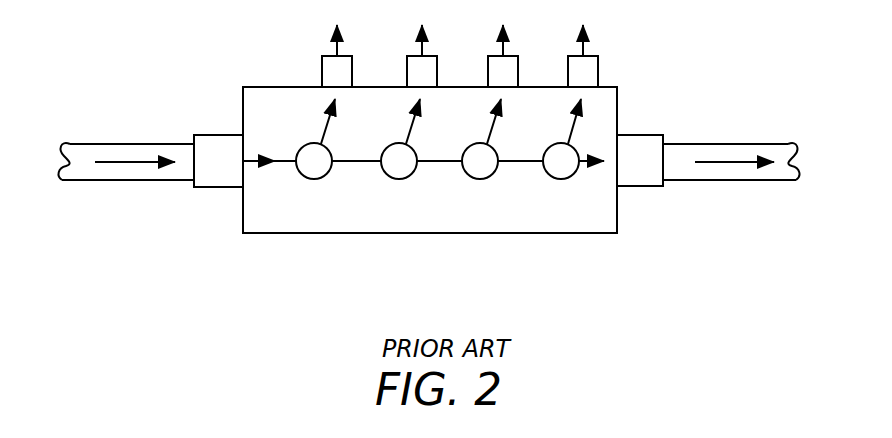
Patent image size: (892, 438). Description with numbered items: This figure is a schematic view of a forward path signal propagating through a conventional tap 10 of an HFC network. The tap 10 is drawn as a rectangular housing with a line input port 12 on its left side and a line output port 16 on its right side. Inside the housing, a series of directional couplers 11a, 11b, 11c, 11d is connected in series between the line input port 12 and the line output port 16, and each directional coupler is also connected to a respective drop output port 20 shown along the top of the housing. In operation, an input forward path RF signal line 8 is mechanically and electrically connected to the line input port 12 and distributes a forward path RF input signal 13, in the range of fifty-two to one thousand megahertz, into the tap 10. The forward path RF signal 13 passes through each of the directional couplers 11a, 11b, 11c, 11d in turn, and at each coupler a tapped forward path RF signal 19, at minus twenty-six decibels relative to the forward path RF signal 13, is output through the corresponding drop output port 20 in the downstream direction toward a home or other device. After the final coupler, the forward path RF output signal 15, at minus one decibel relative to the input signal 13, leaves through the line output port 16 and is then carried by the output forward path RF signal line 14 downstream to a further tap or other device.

The tap 10 is at (269, 248).
The input forward path RF signal line 8 is at (108, 143).
The forward path RF input signal 13 is at (130, 162).
The line input port 12 is at (218, 187).
The directional coupler 11a is at (314, 179).
The directional coupler 11b is at (399, 179).
The directional coupler 11c is at (480, 179).
The directional coupler 11d is at (561, 179).
The drop output port 20 is at (322, 70).
The tapped forward path RF signal 19 is at (337, 40).
The line output port 16 is at (650, 186).
The forward path RF output signal 15 is at (737, 160).
The output forward path RF signal line 14 is at (760, 183).